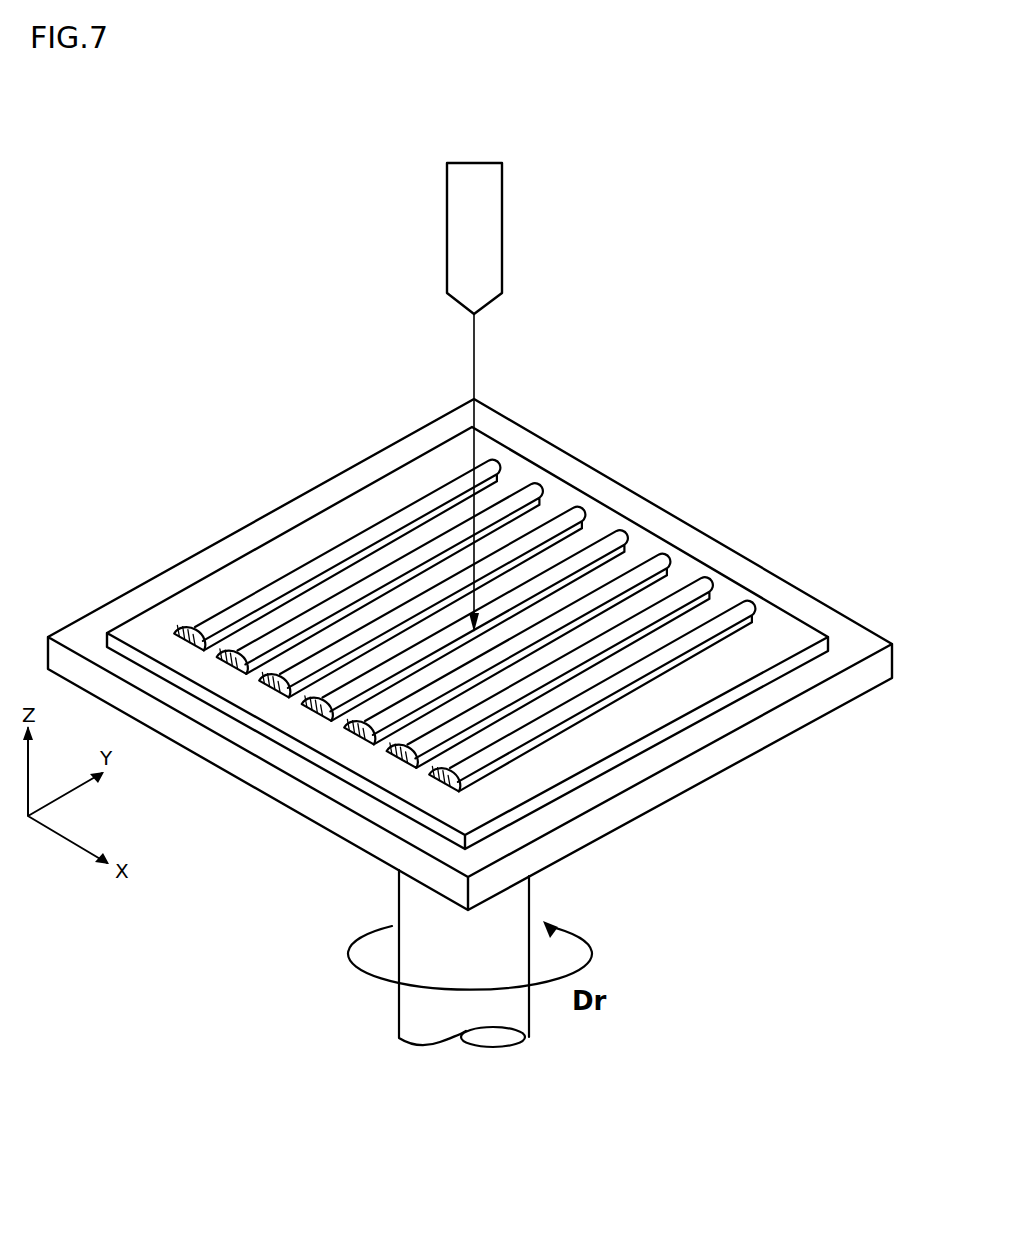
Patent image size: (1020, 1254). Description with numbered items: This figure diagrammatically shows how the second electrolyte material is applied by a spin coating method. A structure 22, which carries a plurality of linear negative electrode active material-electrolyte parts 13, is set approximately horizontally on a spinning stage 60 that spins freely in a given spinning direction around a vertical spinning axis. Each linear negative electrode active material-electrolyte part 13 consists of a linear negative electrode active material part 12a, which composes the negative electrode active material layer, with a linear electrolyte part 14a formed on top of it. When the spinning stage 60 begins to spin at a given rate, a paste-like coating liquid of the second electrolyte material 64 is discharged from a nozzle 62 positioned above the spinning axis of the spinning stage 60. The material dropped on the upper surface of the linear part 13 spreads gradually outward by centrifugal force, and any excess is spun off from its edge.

The spinning stage 60 is at (210, 545).
The nozzle 62 is at (502, 228).
The second electrolyte material 64 is at (474, 455).
The structure 22 is at (335, 529).
The linear electrolyte part 14a is at (577, 520).
The linear negative electrode active material part 12a is at (238, 664).
The linear negative electrode active material-electrolyte part 13 is at (248, 822).